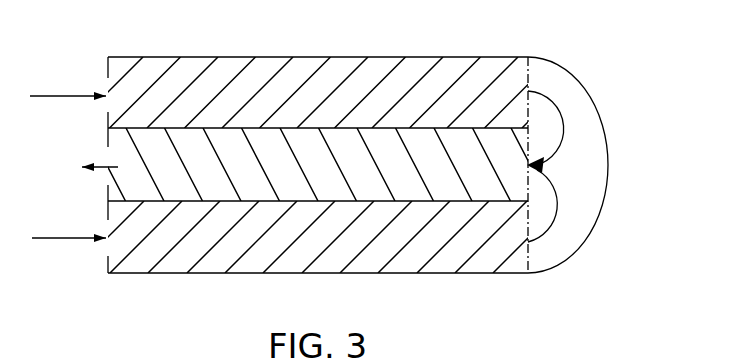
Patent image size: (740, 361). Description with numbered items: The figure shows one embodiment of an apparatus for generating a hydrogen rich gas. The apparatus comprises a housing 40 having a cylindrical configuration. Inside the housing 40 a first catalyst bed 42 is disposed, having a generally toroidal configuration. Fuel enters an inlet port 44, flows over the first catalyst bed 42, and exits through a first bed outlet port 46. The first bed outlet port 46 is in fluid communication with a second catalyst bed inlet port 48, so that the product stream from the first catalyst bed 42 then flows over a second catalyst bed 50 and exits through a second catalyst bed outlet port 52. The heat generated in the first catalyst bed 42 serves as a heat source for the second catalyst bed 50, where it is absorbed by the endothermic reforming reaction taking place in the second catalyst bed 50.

The housing 40 is at (431, 57).
The first catalyst bed 42 is at (337, 80).
The inlet port 44 is at (112, 90).
The first bed outlet port 46 is at (528, 115).
The second catalyst bed inlet port 48 is at (528, 142).
The second catalyst bed 50 is at (175, 144).
The second catalyst bed outlet port 52 is at (89, 166).